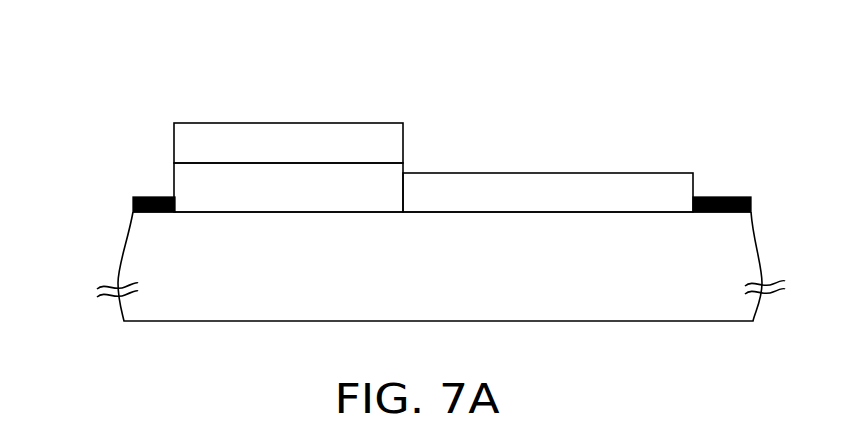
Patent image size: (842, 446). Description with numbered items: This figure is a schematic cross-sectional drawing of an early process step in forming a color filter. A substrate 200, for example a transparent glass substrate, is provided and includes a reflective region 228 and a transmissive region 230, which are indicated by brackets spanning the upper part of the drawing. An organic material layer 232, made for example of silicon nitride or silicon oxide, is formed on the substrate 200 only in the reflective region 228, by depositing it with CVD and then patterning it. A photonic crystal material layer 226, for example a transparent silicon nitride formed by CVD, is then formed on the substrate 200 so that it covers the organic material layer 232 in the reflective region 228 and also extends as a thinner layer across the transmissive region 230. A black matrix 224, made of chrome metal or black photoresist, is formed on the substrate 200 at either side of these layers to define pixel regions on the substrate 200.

The substrate 200 is at (725, 304).
The black matrix 224 is at (132, 205).
The photonic crystal material layer 226 is at (205, 148).
The reflective region 228 is at (174, 58).
The transmissive region 230 is at (405, 58).
The organic material layer 232 is at (192, 178).